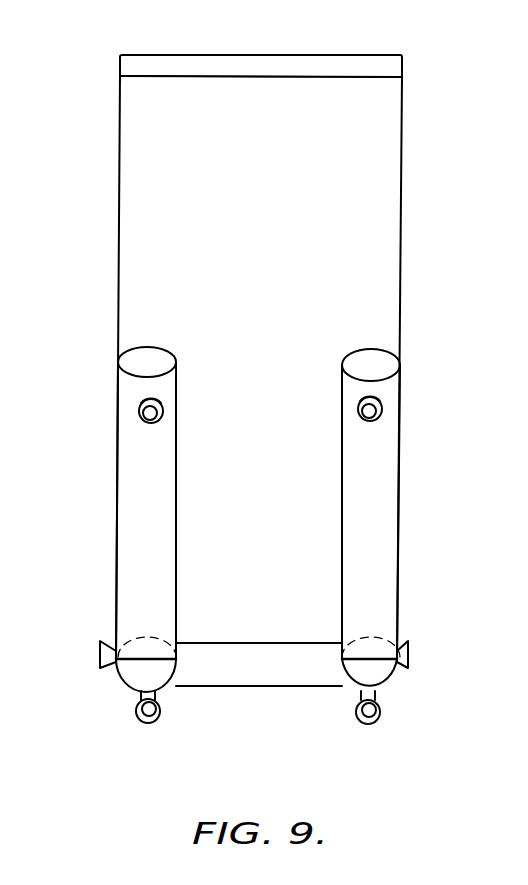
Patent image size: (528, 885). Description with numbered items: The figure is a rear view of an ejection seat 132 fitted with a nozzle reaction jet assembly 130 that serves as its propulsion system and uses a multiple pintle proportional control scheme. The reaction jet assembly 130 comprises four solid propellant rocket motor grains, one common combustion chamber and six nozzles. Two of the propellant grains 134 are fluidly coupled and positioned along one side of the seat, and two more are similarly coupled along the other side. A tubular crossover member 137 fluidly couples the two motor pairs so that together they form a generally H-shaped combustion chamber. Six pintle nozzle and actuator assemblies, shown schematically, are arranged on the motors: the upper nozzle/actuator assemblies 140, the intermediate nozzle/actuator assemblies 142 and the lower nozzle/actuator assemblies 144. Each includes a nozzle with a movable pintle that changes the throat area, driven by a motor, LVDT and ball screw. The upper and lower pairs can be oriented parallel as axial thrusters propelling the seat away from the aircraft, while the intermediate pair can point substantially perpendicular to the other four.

The reaction jet assembly 130 is at (401, 578).
The ejection seat 132 is at (410, 81).
The propellant grains 134 is at (118, 436).
The tubular crossover member 137 is at (297, 690).
The upper nozzle/actuator assemblies 140 is at (140, 405).
The intermediate nozzle/actuator assemblies 142 is at (100, 660).
The lower nozzle/actuator assemblies 144 is at (140, 720).